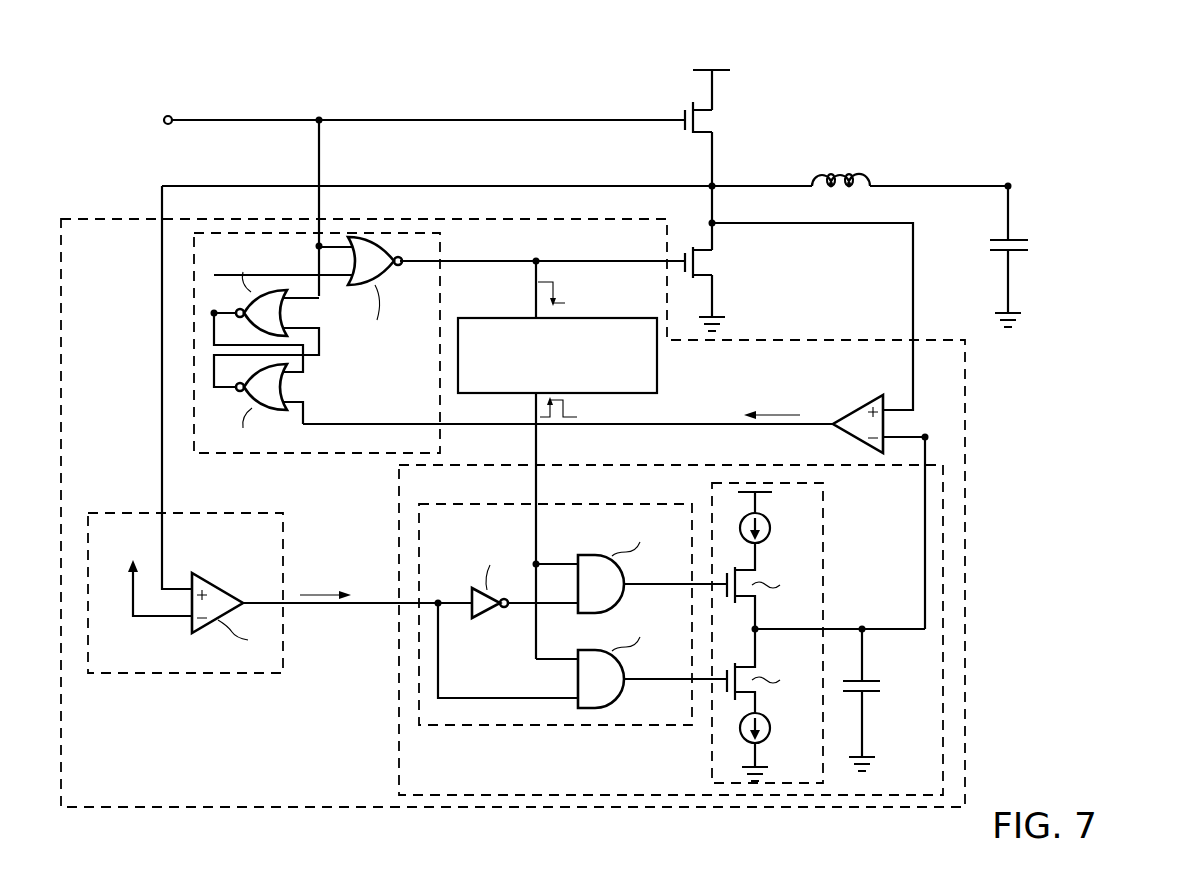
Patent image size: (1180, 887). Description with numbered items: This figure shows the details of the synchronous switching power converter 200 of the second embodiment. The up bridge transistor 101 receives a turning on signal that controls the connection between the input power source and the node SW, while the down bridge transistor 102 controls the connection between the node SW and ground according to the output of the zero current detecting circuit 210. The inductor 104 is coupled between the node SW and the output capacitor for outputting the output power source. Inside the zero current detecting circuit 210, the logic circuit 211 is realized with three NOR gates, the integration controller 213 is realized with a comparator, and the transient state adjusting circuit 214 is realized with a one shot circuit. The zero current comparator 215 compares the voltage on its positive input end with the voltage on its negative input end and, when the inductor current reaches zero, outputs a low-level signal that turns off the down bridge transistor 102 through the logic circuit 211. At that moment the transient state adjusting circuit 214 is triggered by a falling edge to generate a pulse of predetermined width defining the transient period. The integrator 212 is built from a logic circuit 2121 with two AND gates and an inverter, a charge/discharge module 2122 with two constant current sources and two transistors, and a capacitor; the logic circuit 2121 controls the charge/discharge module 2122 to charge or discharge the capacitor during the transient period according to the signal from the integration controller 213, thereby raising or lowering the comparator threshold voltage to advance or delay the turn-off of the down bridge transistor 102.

The synchronous switching power converter 200 is at (1038, 102).
The up bridge transistor 101 is at (712, 120).
The down bridge transistor 102 is at (712, 261).
The inductor 104 is at (837, 170).
The zero current detecting circuit 210 is at (965, 553).
The logic circuit 211 is at (440, 297).
The integrator 212 is at (398, 705).
The integration controller 213 is at (183, 675).
The transient state adjusting circuit 214 is at (657, 368).
The zero current comparator 215 is at (858, 407).
The logic circuit 2121 is at (542, 727).
The charge/discharge module 2122 is at (823, 542).